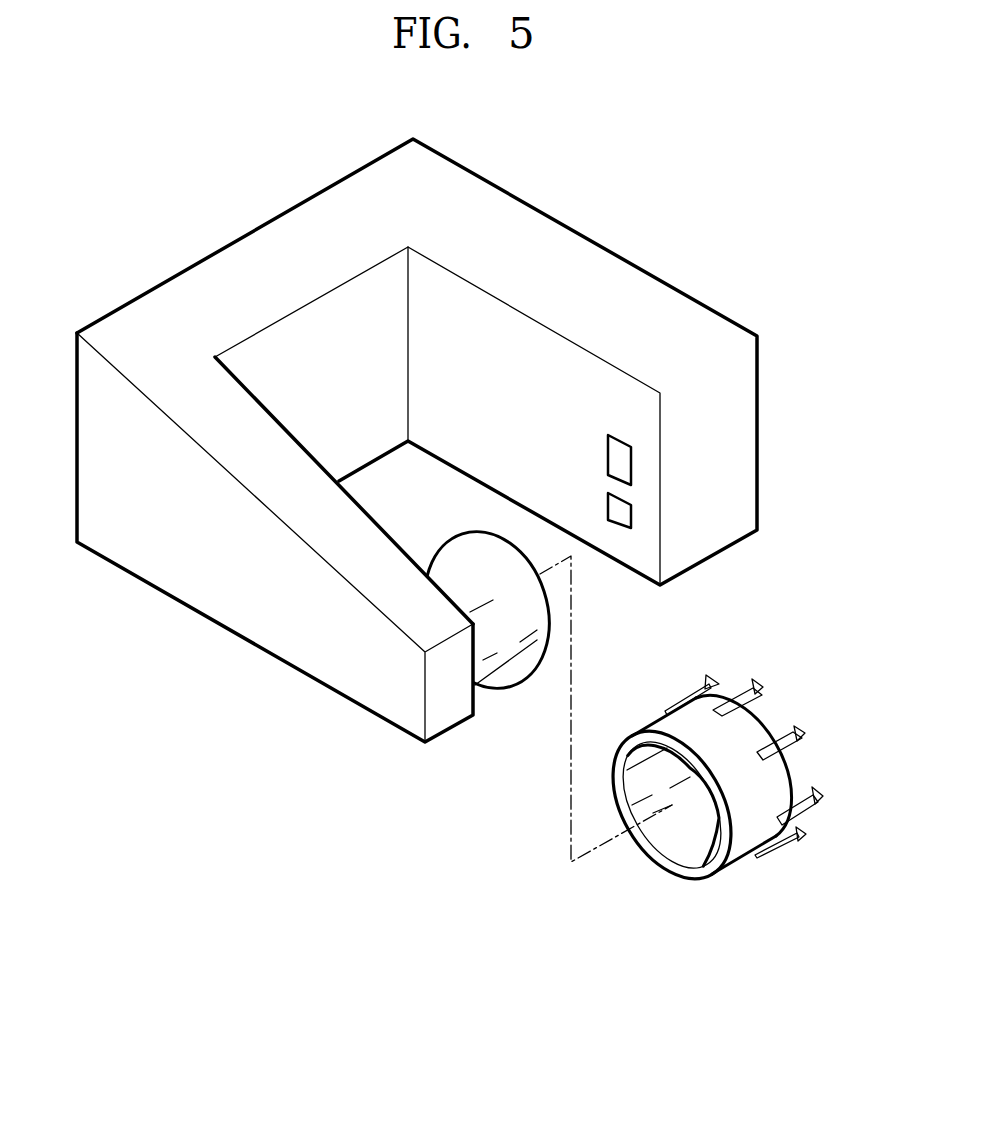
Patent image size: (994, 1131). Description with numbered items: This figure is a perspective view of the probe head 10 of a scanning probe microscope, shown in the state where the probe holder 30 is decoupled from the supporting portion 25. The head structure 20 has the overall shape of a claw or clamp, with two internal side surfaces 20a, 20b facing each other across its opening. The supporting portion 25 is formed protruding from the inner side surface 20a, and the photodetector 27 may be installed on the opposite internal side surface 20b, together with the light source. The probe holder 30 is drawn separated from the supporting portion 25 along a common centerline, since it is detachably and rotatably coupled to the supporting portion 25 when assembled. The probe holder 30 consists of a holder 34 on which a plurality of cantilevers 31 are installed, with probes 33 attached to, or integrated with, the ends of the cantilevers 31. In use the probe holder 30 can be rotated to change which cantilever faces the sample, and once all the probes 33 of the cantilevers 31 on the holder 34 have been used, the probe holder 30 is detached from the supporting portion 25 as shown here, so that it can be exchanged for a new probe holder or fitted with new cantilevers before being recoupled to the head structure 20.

The probe head 10 is at (198, 208).
The head structure 20 is at (422, 440).
The inner side surface 20a is at (276, 419).
The internal side surface 20b is at (483, 322).
The supporting portion 25 is at (631, 523).
The photodetector 27 is at (631, 468).
The probe holder 30 is at (733, 823).
The cantilevers 31 is at (802, 782).
The probes 33 is at (818, 795).
The holder 34 is at (752, 732).